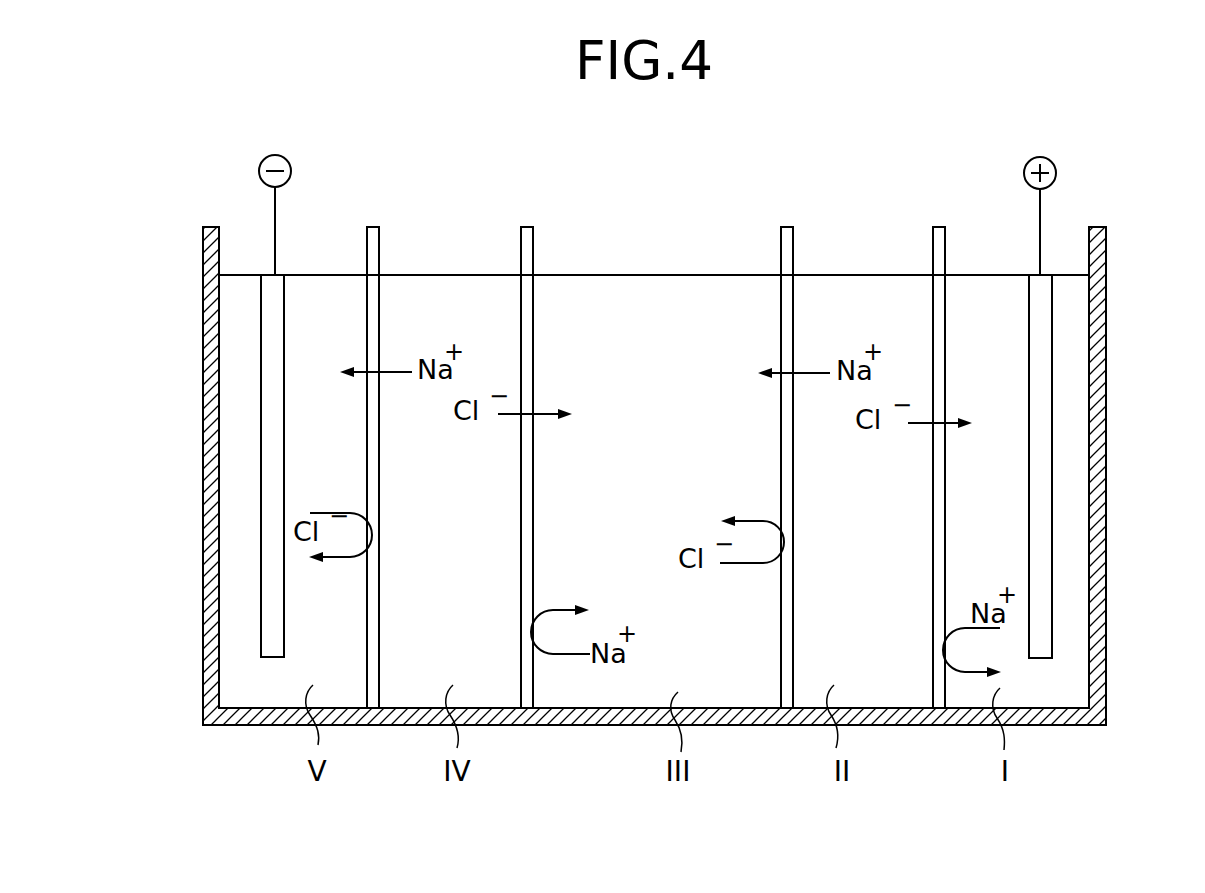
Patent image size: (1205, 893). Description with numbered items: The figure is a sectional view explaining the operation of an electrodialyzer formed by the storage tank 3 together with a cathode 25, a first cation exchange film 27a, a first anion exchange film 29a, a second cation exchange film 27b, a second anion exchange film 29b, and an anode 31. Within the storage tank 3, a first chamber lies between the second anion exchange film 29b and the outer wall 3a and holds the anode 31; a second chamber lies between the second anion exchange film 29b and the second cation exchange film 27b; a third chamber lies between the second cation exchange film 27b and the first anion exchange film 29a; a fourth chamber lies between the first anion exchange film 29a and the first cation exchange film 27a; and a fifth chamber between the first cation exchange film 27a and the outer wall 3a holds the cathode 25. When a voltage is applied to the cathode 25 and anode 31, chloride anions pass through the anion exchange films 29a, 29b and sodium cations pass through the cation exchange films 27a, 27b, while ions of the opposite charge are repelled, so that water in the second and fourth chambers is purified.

The storage tank 3 is at (200, 717).
The outer wall 3a is at (203, 480).
The cathode 25 is at (275, 452).
The first cation exchange film 27a is at (379, 447).
The second cation exchange film 27b is at (793, 463).
The first anion exchange film 29a is at (533, 462).
The second anion exchange film 29b is at (945, 505).
The anode 31 is at (1040, 360).